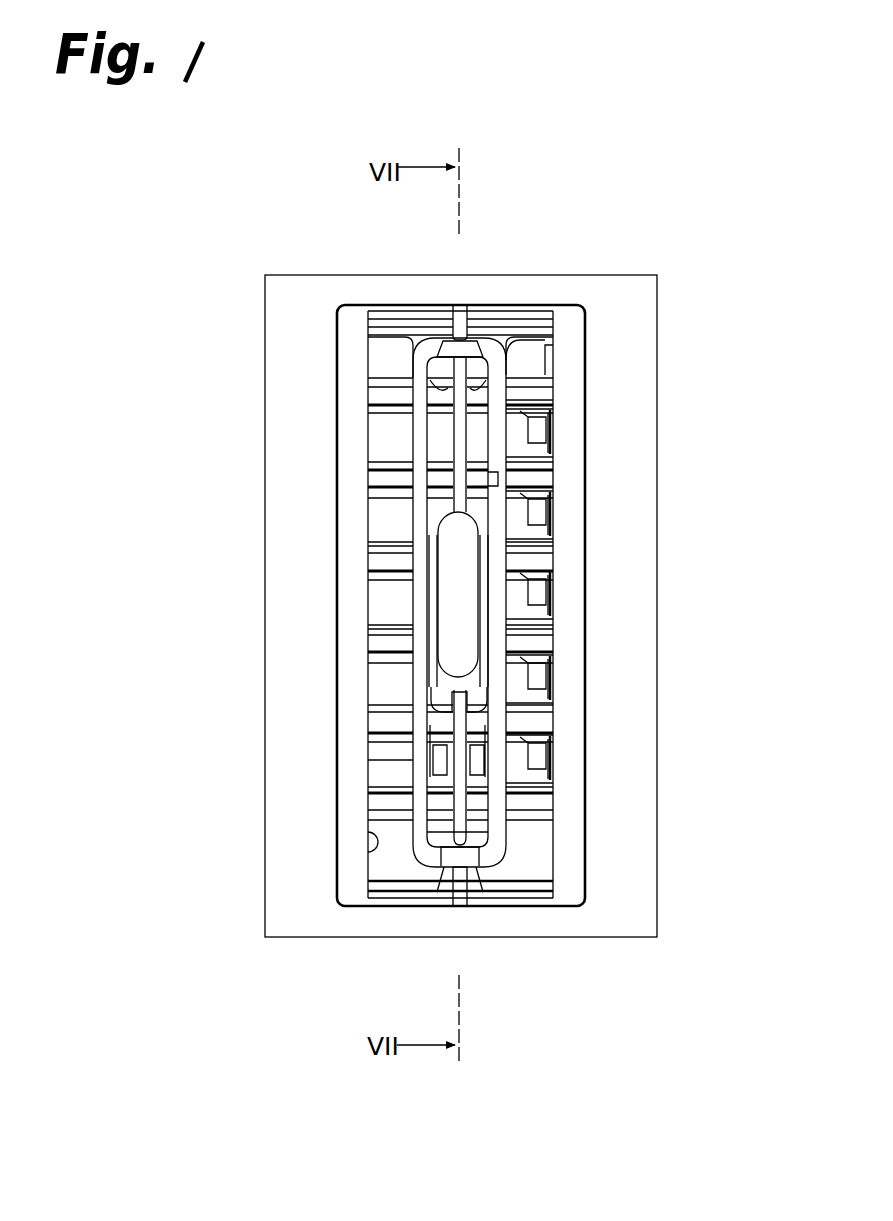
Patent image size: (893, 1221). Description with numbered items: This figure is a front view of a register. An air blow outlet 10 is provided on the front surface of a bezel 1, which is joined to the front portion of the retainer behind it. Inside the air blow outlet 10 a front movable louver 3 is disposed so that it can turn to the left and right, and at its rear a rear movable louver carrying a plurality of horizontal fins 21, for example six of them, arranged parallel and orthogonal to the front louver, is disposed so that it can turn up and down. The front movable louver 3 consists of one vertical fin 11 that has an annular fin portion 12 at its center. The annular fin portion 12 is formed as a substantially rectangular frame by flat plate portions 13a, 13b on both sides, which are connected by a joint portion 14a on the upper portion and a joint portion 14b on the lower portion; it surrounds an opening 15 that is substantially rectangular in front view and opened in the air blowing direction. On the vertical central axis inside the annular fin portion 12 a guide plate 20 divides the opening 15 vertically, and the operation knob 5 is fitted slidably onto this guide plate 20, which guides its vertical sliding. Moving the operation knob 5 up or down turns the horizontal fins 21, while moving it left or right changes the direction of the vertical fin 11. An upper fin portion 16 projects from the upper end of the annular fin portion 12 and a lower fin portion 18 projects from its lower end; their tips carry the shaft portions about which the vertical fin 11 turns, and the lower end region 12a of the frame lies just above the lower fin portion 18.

The bezel 1 is at (607, 275).
The front movable louver 3 is at (520, 446).
The operation knob 5 is at (468, 563).
The air blow outlet 10 is at (372, 852).
The vertical fin 11 is at (516, 338).
The annular fin portion 12 is at (405, 487).
The lower end portion 12a is at (470, 888).
The flat plate portion 13a is at (416, 527).
The flat plate portion 13b is at (498, 608).
The joint portion 14a is at (443, 343).
The joint portion 14b is at (440, 868).
The opening 15 is at (505, 479).
The upper fin portion 16 is at (462, 326).
The lower fin portion 18 is at (463, 892).
The guide plate 20 is at (513, 426).
The horizontal fins 21 is at (390, 362).